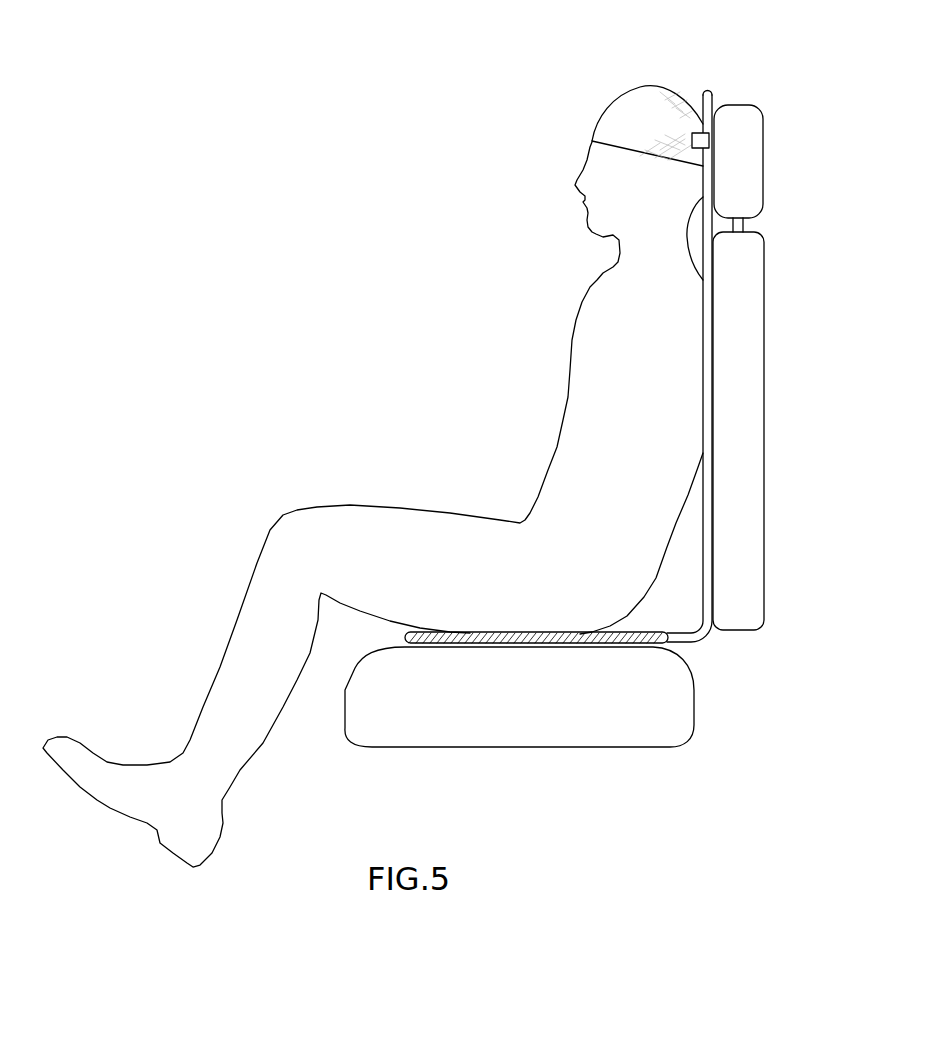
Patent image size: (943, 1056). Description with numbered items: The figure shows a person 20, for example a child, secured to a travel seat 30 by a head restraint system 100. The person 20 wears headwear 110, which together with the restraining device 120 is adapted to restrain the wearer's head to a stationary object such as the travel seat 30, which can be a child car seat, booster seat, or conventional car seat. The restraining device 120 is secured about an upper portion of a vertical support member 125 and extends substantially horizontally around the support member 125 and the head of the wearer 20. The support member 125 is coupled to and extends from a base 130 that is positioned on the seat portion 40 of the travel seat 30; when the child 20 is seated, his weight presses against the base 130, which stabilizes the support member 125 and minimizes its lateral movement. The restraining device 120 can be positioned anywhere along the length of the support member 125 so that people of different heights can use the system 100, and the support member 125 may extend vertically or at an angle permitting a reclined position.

The person 20 is at (572, 338).
The travel seat 30 is at (752, 340).
The seat portion 40 is at (697, 703).
The head restraint system 100 is at (607, 346).
The headwear 110 is at (620, 102).
The restraining device 120 is at (709, 141).
The vertical support member 125 is at (713, 100).
The base 130 is at (547, 643).